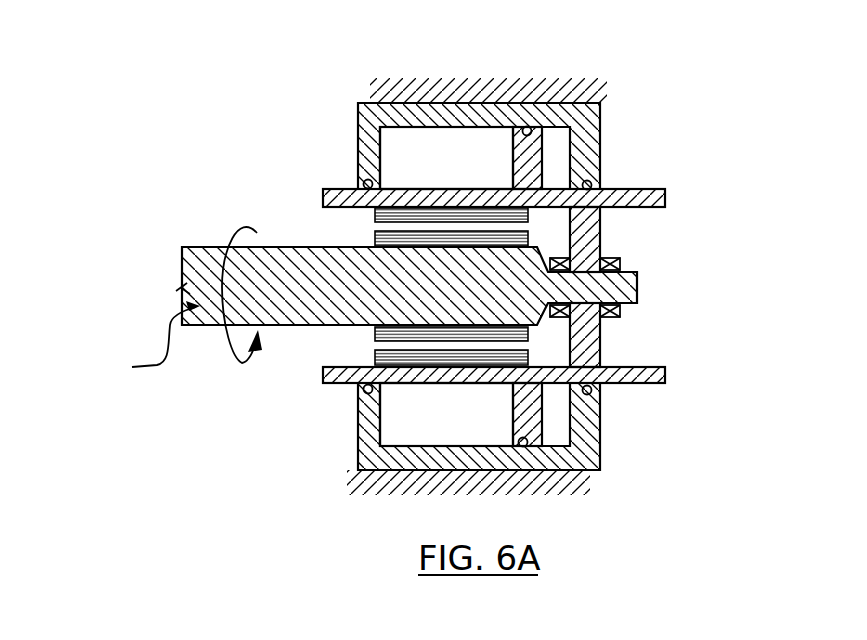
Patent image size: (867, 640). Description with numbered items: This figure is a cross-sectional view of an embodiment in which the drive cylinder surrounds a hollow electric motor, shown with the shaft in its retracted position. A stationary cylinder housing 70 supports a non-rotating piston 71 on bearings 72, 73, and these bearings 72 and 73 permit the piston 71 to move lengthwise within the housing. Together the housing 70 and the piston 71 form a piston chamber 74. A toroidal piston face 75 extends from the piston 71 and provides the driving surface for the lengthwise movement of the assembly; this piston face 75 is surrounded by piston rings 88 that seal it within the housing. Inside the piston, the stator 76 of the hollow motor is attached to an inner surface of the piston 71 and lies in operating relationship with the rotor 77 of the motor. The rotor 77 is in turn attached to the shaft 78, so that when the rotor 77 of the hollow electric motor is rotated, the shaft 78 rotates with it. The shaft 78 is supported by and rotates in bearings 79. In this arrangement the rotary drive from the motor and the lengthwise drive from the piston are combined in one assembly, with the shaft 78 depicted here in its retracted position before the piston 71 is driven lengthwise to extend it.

The stationary cylinder housing 70 is at (585, 117).
The non-rotating piston 71 is at (642, 375).
The bearing 72 is at (366, 180).
The bearing 73 is at (587, 187).
The piston chamber 74 is at (442, 142).
The toroidal piston face 75 is at (528, 158).
The stator 76 is at (377, 213).
The rotor 77 is at (528, 243).
The shaft 78 is at (148, 340).
The bearings 79 is at (607, 333).
The piston rings 88 is at (530, 128).